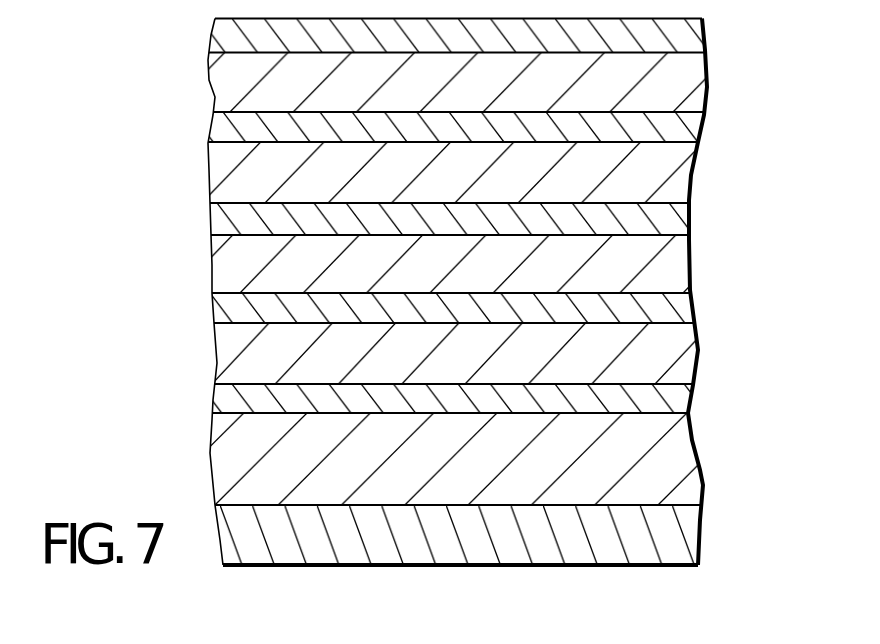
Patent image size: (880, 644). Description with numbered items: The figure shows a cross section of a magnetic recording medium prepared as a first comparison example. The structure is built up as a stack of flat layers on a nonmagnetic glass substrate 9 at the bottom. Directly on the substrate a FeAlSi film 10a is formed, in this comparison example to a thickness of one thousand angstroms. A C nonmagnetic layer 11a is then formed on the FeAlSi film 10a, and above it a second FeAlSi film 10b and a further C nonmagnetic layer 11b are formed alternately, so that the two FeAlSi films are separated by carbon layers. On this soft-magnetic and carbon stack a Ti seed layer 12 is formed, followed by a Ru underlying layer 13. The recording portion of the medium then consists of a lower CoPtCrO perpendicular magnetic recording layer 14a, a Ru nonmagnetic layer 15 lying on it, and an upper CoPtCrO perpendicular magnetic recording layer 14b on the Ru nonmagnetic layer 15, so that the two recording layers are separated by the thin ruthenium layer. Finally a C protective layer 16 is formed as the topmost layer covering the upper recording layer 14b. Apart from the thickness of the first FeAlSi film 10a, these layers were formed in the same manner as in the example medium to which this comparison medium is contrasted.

The nonmagnetic glass substrate 9 is at (699, 535).
The FeAlSi film 10a is at (698, 462).
The FeAlSi film 10b is at (697, 352).
The C nonmagnetic layer 11a is at (690, 405).
The C nonmagnetic layer 11b is at (691, 312).
The Ti seed layer 12 is at (690, 268).
The Ru underlying layer 13 is at (689, 218).
The lower CoPtCrO perpendicular magnetic recording layer 14a is at (690, 168).
The upper CoPtCrO perpendicular magnetic recording layer 14b is at (707, 87).
The Ru nonmagnetic layer 15 is at (703, 128).
The C protective layer 16 is at (703, 37).